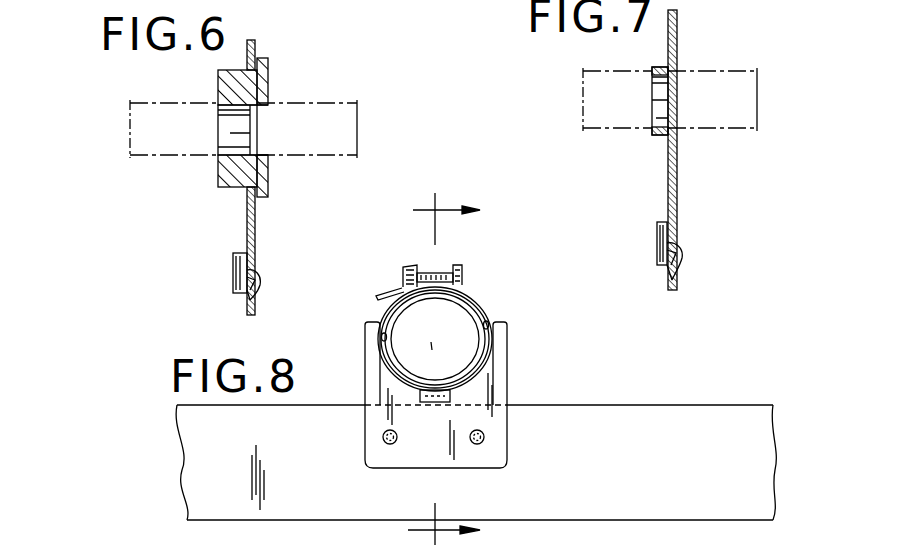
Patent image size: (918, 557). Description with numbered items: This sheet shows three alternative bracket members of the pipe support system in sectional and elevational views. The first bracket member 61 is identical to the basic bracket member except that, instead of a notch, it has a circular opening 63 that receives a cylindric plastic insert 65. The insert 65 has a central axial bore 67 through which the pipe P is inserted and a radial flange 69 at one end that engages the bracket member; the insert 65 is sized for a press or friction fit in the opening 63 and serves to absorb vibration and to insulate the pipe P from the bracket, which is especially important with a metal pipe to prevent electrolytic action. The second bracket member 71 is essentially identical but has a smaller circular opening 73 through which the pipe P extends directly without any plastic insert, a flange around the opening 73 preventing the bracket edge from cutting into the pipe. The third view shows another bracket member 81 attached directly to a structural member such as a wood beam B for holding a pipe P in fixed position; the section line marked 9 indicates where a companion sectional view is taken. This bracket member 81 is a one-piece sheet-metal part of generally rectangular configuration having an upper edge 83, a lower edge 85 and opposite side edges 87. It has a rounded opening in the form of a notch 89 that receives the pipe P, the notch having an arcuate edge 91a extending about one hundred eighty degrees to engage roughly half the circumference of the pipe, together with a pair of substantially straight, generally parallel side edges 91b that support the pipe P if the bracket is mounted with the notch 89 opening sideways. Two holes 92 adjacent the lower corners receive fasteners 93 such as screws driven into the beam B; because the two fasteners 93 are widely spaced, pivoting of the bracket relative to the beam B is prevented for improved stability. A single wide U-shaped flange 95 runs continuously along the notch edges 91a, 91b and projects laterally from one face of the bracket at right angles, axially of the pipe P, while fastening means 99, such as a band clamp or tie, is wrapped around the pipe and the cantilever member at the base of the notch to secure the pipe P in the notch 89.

In FIG. 6, the bracket member 61 is at (252, 44).
In FIG. 6, the circular opening 63 is at (228, 184).
In FIG. 6, the cylindric plastic insert 65 is at (218, 85).
In FIG. 6, the central axial bore 67 is at (215, 152).
In FIG. 6, the radial flange 69 is at (268, 182).
In FIG. 7, the bracket member 71 is at (678, 48).
In FIG. 7, the circular opening 73 is at (677, 118).
In FIG. 8, the bracket member 81 is at (498, 370).
In FIG. 8, the upper edge 83 is at (493, 320).
In FIG. 8, the lower edge 85 is at (470, 467).
In FIG. 8, the side edges 87 is at (366, 372).
In FIG. 8, the notch 89 is at (430, 346).
In FIG. 8, the arcuate edge 91a is at (507, 384).
In FIG. 8, the side edges 91b is at (363, 322).
In FIG. 8, the holes 92 is at (382, 432).
In FIG. 8, the fasteners 93 is at (382, 445).
In FIG. 8, the U-shaped flange 95 is at (390, 340).
In FIG. 8, the fastening means 99 is at (445, 265).
In FIG. 8, the section line 9- 9 is at (444, 372).
In FIG. 6, the pipe P is at (320, 102).
In FIG. 7, the pipe P is at (737, 70).
In FIG. 8, the pipe P is at (465, 311).
In FIG. 8, the wood beam B is at (663, 422).